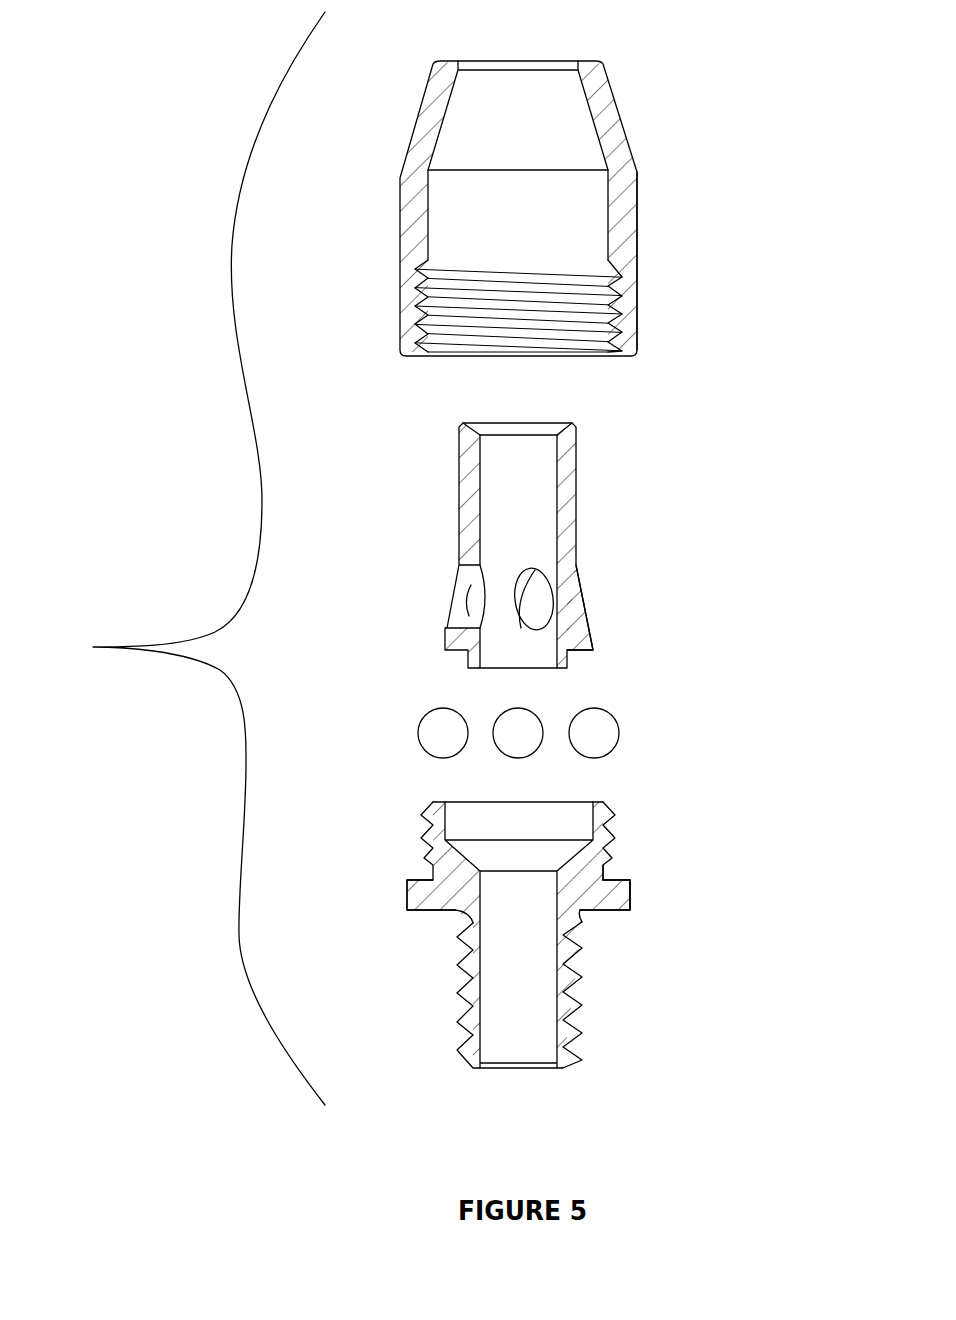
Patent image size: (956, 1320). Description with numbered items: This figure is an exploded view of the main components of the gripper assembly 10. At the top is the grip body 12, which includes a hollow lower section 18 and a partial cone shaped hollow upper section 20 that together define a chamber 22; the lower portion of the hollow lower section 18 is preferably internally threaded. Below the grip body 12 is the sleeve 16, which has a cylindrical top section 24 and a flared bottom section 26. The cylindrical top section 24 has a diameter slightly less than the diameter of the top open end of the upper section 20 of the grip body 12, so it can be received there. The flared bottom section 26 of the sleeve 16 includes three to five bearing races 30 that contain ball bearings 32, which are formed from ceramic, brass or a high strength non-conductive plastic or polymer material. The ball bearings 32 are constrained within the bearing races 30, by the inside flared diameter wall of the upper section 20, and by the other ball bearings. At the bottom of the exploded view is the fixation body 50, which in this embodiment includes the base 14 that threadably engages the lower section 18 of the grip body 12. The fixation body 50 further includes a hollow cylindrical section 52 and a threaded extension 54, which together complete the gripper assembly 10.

The gripper assembly 10 is at (96, 647).
The grip body 12 is at (602, 184).
The base 14 is at (600, 917).
The sleeve 16 is at (543, 533).
The hollow lower section 18 is at (626, 240).
The hollow upper section 20 is at (602, 97).
The chamber 22 is at (590, 196).
The cylindrical top section 24 is at (567, 458).
The flared bottom section 26 is at (577, 612).
The bearing races 30 is at (527, 622).
The ball bearings 32 is at (598, 735).
The fixation body 50 is at (662, 888).
The hollow cylindrical section 52 is at (622, 902).
The threaded extension 54 is at (573, 1022).